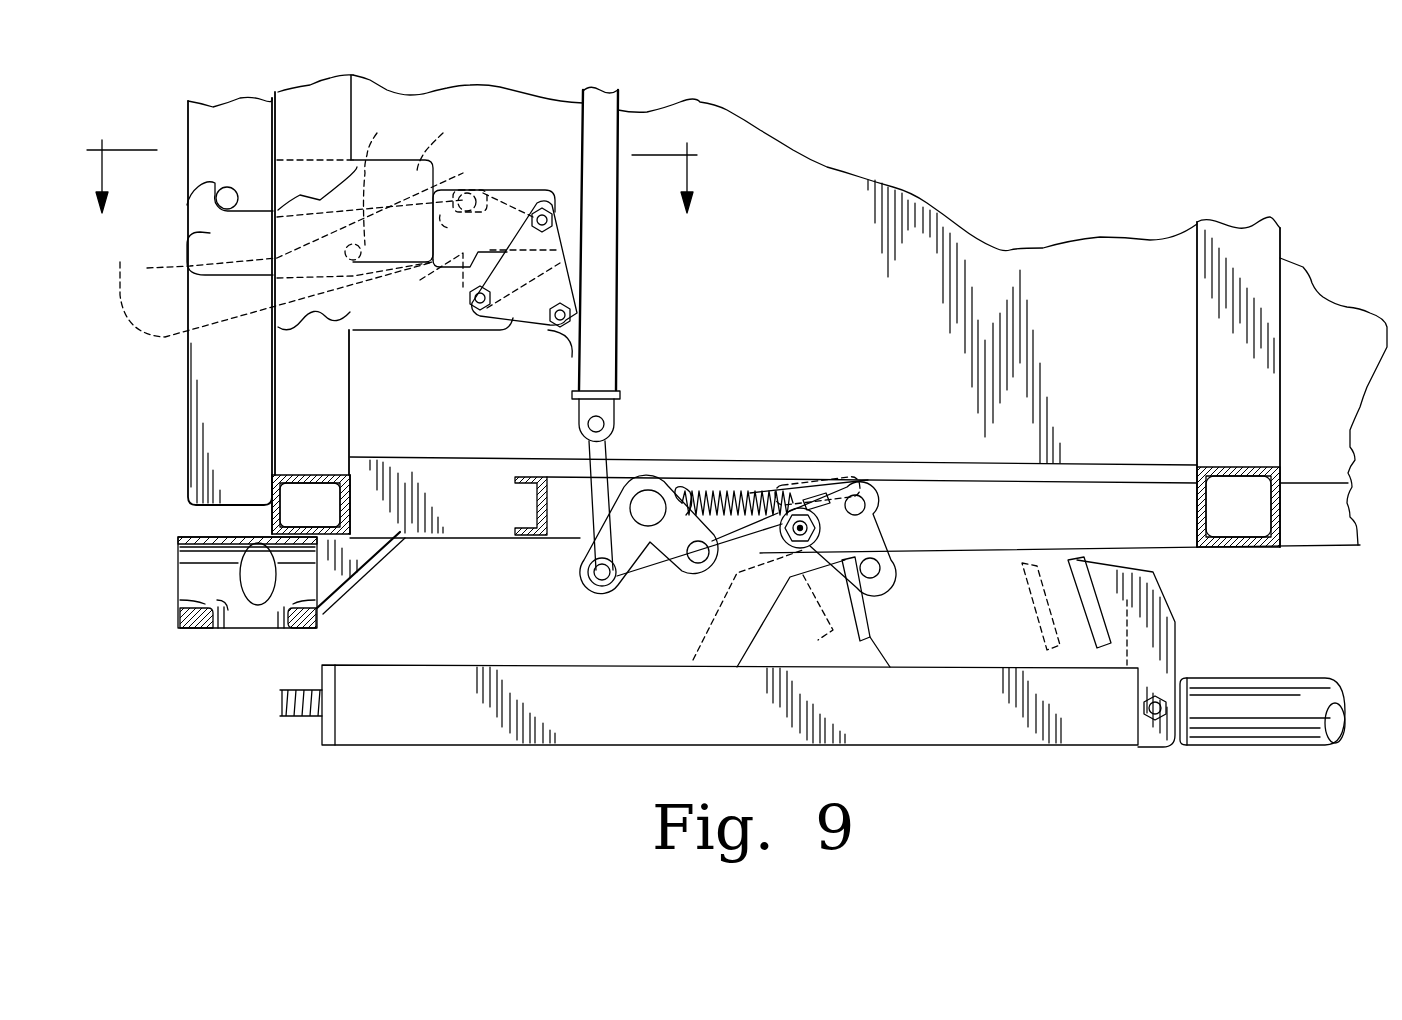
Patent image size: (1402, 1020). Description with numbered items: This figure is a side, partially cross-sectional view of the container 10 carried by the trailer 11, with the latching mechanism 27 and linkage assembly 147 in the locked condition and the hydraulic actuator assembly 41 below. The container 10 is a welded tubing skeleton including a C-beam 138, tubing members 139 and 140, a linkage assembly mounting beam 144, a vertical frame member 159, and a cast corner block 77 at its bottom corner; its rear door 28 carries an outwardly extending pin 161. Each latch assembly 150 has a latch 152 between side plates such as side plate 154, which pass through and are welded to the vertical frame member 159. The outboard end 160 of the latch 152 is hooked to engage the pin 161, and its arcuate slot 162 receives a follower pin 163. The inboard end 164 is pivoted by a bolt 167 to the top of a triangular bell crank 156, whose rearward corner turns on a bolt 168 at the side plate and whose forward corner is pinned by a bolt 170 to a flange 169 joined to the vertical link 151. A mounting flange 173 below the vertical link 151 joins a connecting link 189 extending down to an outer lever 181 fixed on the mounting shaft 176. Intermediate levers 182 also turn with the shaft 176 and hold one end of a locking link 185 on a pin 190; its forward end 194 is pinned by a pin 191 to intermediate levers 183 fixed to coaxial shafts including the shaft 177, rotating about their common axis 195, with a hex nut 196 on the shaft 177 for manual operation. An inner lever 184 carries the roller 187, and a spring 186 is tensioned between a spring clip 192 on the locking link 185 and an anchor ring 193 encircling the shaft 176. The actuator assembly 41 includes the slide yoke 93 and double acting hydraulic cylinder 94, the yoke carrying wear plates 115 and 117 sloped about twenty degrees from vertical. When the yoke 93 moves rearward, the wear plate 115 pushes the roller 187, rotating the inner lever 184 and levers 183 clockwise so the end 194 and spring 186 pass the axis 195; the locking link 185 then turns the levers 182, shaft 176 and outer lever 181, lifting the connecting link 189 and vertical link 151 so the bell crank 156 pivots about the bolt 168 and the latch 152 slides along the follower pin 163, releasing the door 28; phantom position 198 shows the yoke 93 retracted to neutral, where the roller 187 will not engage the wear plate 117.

The container 10 is at (995, 250).
The trailer 11 is at (394, 162).
The latching mechanism 27 is at (722, 230).
The door 28 is at (188, 415).
The hydraulic actuator assembly 41 is at (440, 650).
The corner block 77 is at (178, 583).
The slide yoke 93 is at (1185, 595).
The double acting hydraulic cylinder 94 is at (1290, 678).
The wear plate 115 is at (1095, 600).
The wear plate 117 is at (875, 630).
The C-beam 138 is at (515, 490).
The tubing member 139 is at (305, 478).
The tubing member 140 is at (1235, 470).
The linkage assembly mounting beam 144 is at (1082, 500).
The linkage assembly 147 is at (775, 445).
The latch assembly 150 is at (492, 160).
The vertical link 151 is at (618, 272).
The latch 152 is at (200, 228).
The latch side plate 154 is at (395, 320).
The bell crank 156 is at (520, 327).
The vertical frame member 159 is at (350, 405).
The outboard end 160 is at (187, 198).
The pin 161 is at (228, 188).
The arcuate slot 162 is at (370, 186).
The follower pin 163 is at (374, 185).
The inboard end 164 is at (510, 185).
The bolt 167 is at (545, 210).
The bolt 168 is at (480, 310).
The flange 169 is at (567, 386).
The bolt 170 is at (577, 312).
The mounting flange 173 is at (620, 395).
The mounting shaft 176 is at (650, 505).
The mounting shaft 177 is at (820, 578).
The outer lever 181 is at (603, 590).
The intermediate lever 182 is at (655, 565).
The intermediate lever 183 is at (875, 520).
The inner lever 184 is at (880, 568).
The locking link 185 is at (720, 590).
The spring 186 is at (735, 492).
The roller 187 is at (875, 590).
The connecting link 189 is at (590, 540).
The pin 190 is at (698, 565).
The pin 191 is at (862, 507).
The spring clip 192 is at (820, 490).
The anchor ring 193 is at (686, 485).
The forward end 194 is at (855, 478).
The common axis 195 is at (805, 518).
The hex nut 196 is at (790, 515).
The neutral position 198 is at (1040, 633).